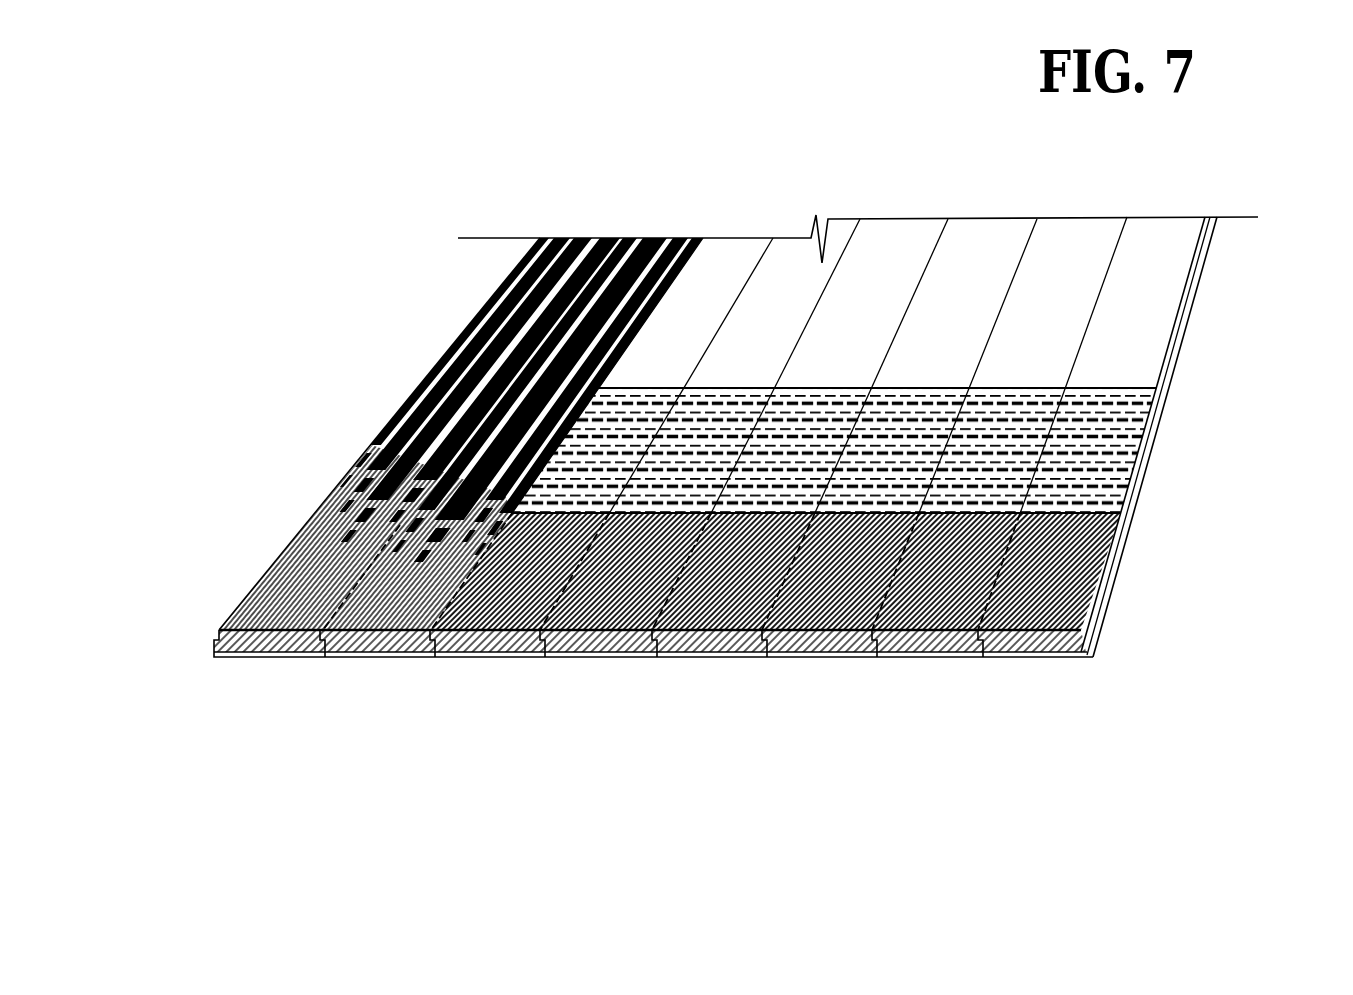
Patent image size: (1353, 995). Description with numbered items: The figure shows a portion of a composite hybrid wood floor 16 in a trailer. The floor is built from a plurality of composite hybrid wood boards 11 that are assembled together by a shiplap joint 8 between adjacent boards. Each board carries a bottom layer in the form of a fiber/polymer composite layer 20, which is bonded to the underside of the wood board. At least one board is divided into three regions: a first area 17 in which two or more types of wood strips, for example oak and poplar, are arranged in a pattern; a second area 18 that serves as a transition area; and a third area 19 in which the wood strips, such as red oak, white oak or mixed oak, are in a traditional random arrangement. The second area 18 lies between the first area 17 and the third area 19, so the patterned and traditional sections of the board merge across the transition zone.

The shiplap joint 8 is at (963, 655).
The composite hybrid wood floor board 11 is at (566, 230).
The composite hybrid wood floor 16 is at (633, 688).
The first area 17 is at (462, 313).
The second area 18 is at (360, 433).
The third area 19 is at (250, 550).
The composite layer 20 is at (267, 657).